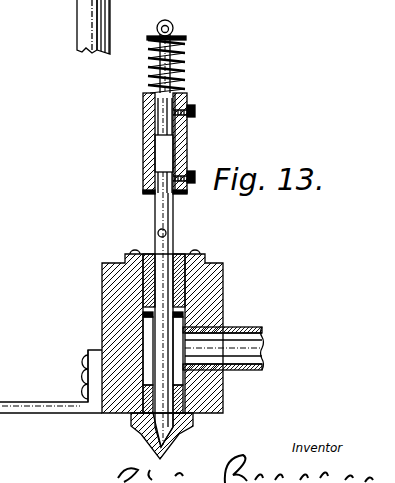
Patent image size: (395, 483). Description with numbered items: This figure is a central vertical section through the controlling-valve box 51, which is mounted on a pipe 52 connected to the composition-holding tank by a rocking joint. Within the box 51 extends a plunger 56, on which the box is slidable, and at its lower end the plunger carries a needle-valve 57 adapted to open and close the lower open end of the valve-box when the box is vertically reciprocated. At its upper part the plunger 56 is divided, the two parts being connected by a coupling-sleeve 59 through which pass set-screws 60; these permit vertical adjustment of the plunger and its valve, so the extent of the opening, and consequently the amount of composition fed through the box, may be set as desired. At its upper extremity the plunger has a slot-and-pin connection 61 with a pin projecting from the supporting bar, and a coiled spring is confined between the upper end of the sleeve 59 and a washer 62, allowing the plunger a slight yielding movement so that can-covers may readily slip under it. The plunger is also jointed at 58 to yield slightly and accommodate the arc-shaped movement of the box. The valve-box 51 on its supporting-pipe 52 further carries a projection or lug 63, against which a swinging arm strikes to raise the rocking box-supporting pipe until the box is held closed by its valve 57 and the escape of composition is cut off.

The controlling-valve box 51 is at (223, 293).
The pipe 52 is at (262, 345).
The plunger 56 is at (155, 215).
The needle-valve 57 is at (188, 431).
The joint 58 is at (168, 233).
The coupling-sleeve 59 is at (145, 148).
The set-screws 60 is at (204, 108).
The slot-and-pin connection 61 is at (173, 30).
The washer 62 is at (157, 40).
The lug 63 is at (72, 413).